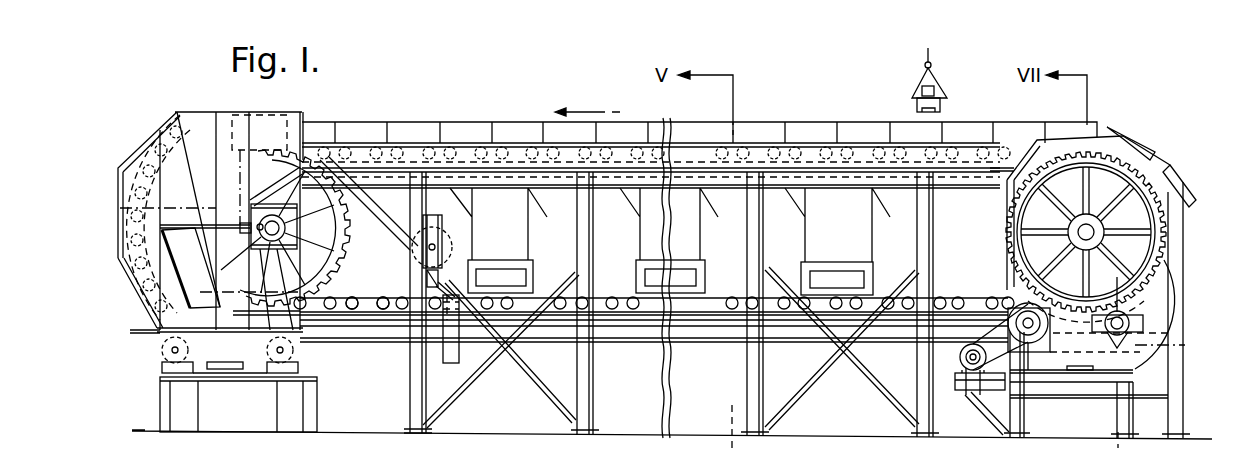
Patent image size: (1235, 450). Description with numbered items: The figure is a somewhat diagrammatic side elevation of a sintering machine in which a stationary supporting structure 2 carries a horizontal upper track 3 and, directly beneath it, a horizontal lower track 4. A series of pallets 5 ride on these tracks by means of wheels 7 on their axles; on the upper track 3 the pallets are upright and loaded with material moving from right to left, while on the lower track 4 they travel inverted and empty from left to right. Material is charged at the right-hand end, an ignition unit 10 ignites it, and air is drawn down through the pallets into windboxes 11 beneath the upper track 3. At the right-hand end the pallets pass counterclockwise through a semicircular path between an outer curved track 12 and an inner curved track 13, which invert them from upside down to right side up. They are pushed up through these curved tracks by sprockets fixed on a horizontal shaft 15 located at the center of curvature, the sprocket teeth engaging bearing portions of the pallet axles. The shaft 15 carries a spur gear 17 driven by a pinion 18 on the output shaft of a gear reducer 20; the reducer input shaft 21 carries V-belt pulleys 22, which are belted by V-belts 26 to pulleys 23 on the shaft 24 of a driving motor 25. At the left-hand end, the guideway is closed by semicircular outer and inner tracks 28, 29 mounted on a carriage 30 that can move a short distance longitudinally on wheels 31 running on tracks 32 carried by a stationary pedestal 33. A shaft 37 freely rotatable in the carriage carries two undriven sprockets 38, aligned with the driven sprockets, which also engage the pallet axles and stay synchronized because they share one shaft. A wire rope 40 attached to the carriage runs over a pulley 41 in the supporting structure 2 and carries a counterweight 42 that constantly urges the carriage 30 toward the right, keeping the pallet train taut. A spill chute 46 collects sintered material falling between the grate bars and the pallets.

The stationary supporting structure 2 is at (580, 396).
The horizontal upper track 3 is at (358, 143).
The horizontal lower track 4 is at (364, 320).
The pallets 5 is at (506, 118).
The wheel 7 is at (388, 300).
The ignition unit 10 is at (912, 104).
The windboxes 11 is at (526, 220).
The outer curved track 12 is at (1142, 142).
The inner curved track 13 is at (1050, 282).
The horizontal shaft 15 is at (1076, 238).
The spur gear 17 is at (1008, 216).
The pinion 18 is at (1178, 347).
The gear reducer 20 is at (1089, 374).
The input shaft 21 is at (1030, 332).
The V-belt pulleys 22 is at (1020, 308).
The V-belt pulleys 23 is at (966, 368).
The shaft 24 is at (960, 357).
The driving motor 25 is at (974, 386).
The V-belts 26 is at (996, 426).
The outer curved track 28 is at (157, 132).
The inner curved track 29 is at (188, 174).
The carriage 30 is at (156, 328).
The wheels 31 is at (165, 362).
The tracks 32 is at (254, 374).
The stationary pedestal 33 is at (226, 426).
The shaft 37 is at (281, 240).
The sprockets 38 is at (344, 260).
The wire rope 40 is at (450, 262).
The pulley 41 is at (448, 240).
The counterweight 42 is at (451, 366).
The spill chute 46 is at (195, 273).